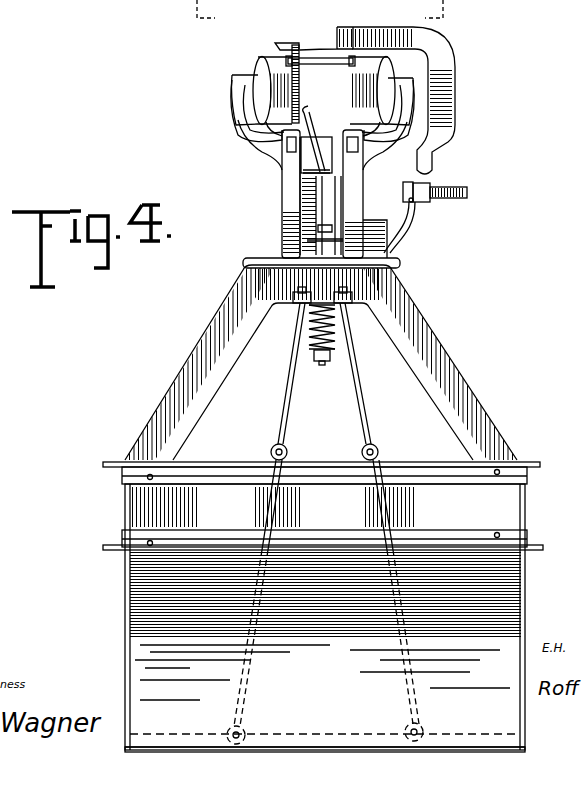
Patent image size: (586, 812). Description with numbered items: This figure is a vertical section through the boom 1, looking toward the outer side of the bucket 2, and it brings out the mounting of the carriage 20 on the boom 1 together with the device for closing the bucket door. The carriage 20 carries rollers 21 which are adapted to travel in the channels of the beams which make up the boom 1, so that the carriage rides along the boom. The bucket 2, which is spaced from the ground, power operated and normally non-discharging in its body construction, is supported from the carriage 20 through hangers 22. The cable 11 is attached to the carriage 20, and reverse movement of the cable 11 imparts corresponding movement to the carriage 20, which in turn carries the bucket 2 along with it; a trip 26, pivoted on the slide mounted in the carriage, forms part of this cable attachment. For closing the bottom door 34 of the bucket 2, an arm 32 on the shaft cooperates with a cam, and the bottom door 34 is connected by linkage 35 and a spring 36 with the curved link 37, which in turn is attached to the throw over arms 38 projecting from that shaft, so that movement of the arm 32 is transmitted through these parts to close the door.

The boom 1 is at (340, 78).
The bucket 2 is at (147, 580).
The cable 11 is at (321, 39).
The carriage 20 is at (292, 186).
The rollers 21 is at (257, 65).
The hangers 22 is at (437, 375).
The trip 26 is at (315, 188).
The arm 32 is at (367, 220).
The bottom door 34 is at (387, 748).
The linkage 35 is at (340, 462).
The spring 36 is at (313, 328).
The curved link 37 is at (315, 240).
The throw over arms 38 is at (322, 227).